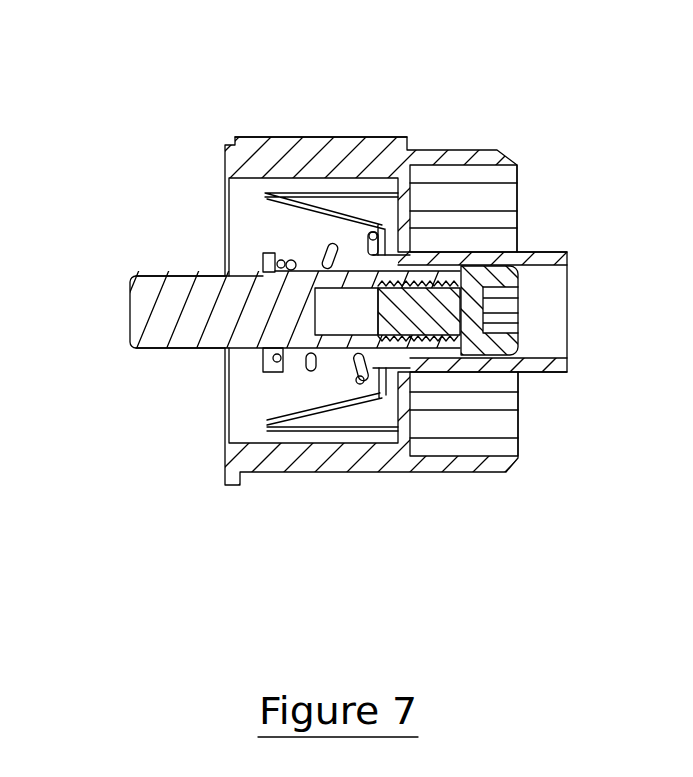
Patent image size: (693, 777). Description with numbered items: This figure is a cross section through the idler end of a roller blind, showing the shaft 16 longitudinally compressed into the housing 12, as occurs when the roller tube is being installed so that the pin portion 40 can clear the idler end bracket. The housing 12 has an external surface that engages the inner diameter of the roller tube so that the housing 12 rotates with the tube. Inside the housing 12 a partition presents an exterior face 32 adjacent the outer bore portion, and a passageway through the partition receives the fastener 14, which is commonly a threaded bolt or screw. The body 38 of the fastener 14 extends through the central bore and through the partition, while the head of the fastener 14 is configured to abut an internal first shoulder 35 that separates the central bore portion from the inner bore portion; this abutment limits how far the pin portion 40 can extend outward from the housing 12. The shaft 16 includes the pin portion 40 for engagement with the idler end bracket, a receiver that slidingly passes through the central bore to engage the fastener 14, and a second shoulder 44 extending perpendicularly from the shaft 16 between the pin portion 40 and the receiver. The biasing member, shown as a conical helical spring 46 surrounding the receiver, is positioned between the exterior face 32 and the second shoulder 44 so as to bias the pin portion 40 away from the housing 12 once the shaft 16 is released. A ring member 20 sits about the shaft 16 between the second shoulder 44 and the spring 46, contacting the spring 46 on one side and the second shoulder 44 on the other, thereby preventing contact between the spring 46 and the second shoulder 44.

The housing 12 is at (336, 128).
The fastener 14 is at (537, 283).
The shaft 16 is at (162, 342).
The ring member 20 is at (278, 262).
The exterior face 32 is at (422, 365).
The first shoulder 35 is at (427, 357).
The body 38 is at (425, 270).
The pin portion 40 is at (183, 293).
The second shoulder 44 is at (262, 360).
The helical spring 46 is at (296, 473).